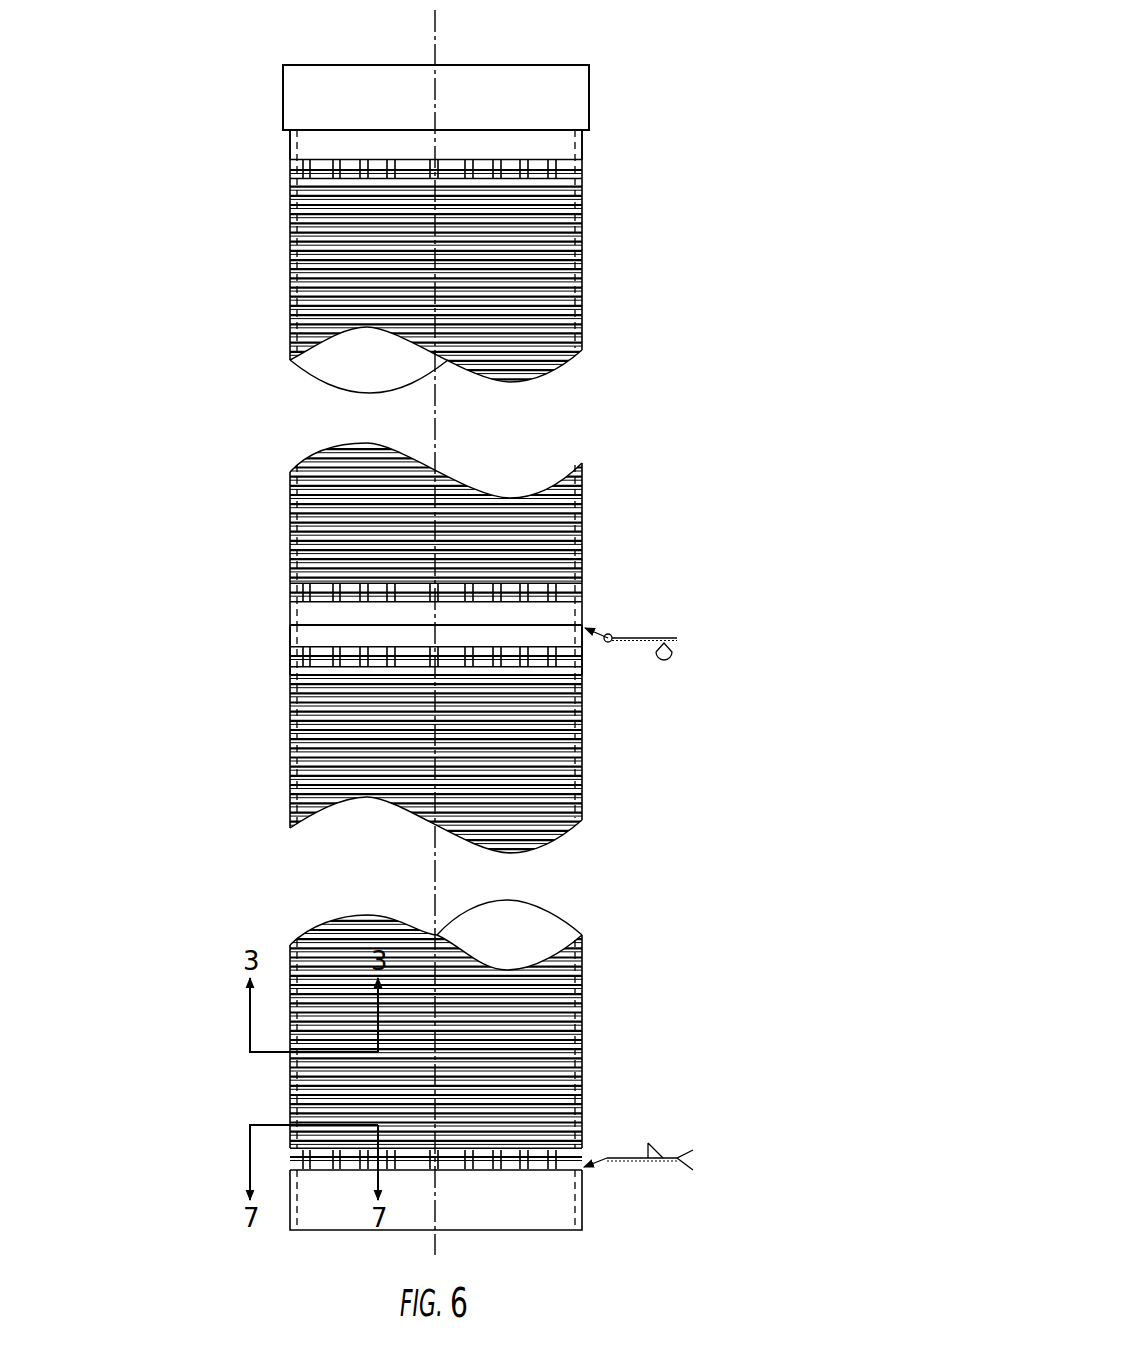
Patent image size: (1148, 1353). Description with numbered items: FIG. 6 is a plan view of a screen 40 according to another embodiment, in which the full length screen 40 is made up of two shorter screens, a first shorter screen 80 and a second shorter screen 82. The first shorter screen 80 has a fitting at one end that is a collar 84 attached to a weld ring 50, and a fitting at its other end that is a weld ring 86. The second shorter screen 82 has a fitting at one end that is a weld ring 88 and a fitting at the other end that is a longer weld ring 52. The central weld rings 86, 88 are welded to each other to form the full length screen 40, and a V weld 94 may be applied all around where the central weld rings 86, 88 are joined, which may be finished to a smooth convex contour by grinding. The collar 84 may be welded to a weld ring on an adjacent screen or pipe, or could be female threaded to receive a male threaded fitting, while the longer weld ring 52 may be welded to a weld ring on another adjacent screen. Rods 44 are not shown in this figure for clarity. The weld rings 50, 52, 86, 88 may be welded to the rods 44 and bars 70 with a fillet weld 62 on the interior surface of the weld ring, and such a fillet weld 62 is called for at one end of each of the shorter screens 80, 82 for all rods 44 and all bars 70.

The screen 40 is at (642, 93).
The rods 44 is at (436, 1024).
The weld ring 50 is at (563, 142).
The longer weld ring 52 is at (522, 1207).
The fillet weld 62 is at (663, 1145).
The bars 70 is at (300, 168).
The first shorter screen 80 is at (582, 223).
The second shorter screen 82 is at (583, 748).
The collar 84 is at (571, 87).
The weld ring 86 is at (570, 620).
The weld ring 88 is at (570, 640).
The V weld 94 is at (665, 623).